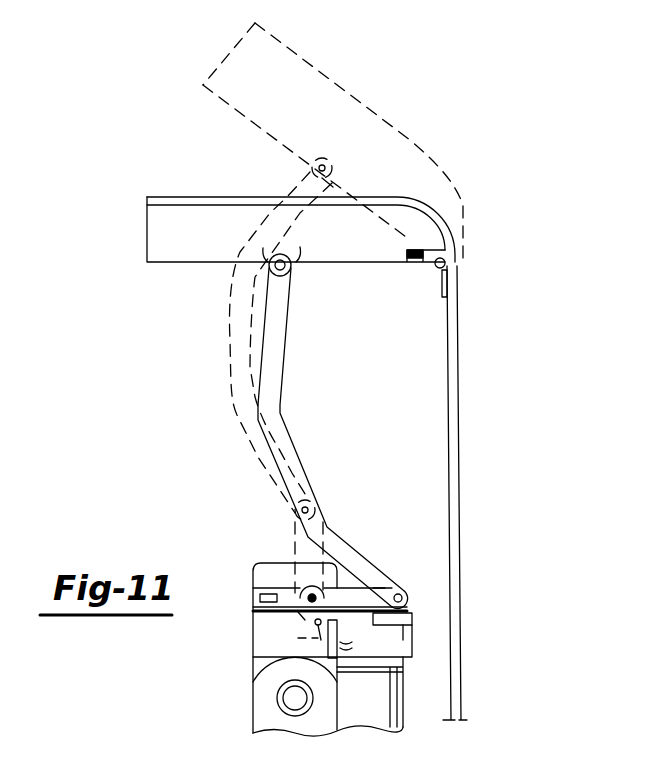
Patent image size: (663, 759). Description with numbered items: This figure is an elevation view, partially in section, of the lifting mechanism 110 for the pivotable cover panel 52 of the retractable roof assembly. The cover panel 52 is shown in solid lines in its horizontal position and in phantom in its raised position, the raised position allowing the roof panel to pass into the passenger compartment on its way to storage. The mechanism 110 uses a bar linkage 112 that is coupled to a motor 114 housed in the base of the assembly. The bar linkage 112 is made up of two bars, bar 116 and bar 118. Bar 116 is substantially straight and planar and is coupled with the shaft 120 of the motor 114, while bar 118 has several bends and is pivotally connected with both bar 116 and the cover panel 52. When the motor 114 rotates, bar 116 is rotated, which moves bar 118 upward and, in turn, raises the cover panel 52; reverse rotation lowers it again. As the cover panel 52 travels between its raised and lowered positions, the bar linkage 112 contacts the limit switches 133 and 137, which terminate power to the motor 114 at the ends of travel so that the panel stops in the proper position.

The cover panel 52 is at (195, 197).
The mechanism 110 is at (243, 637).
The bar linkage 112 is at (298, 585).
The motor 114 is at (330, 697).
The bar 116 is at (262, 594).
The bar 118 is at (347, 551).
The shaft 120 is at (303, 608).
The limit switch 133 is at (340, 630).
The limit switch 137 is at (412, 618).